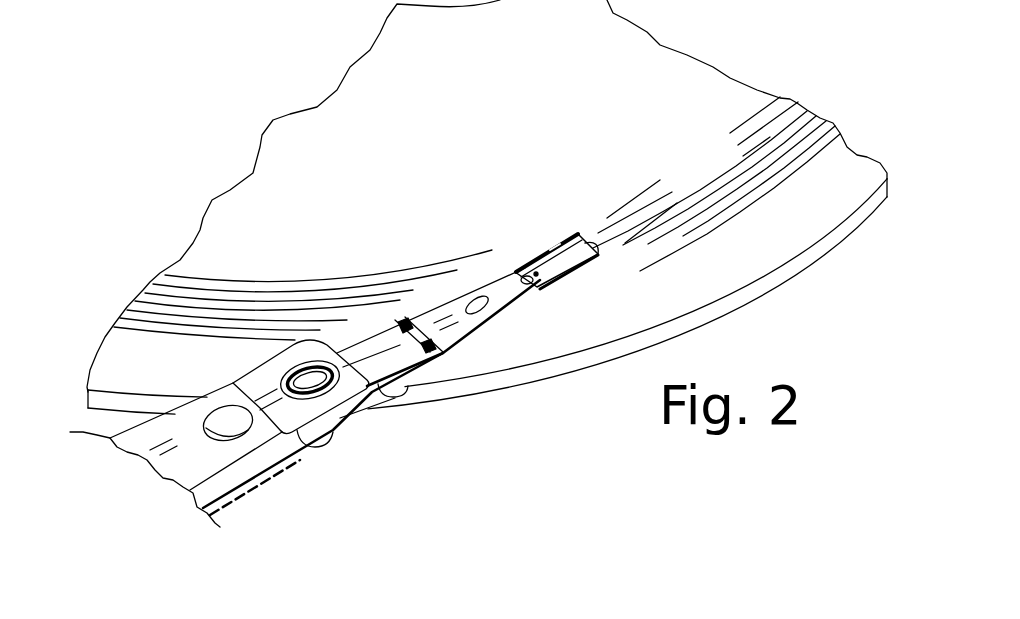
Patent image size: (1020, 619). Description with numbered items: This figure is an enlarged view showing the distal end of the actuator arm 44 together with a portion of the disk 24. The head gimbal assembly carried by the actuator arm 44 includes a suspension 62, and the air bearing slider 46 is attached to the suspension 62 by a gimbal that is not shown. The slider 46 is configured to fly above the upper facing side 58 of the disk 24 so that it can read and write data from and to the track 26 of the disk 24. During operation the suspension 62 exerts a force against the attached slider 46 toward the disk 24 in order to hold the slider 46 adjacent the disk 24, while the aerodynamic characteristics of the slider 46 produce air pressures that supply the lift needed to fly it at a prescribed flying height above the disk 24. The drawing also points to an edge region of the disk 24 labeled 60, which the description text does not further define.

The disk 24 is at (342, 102).
The track 26 is at (727, 173).
The actuator arm 44 is at (188, 472).
The air bearing slider 46 is at (583, 270).
The upper facing side 58 is at (861, 162).
The disk outer edge 60 is at (872, 219).
The suspension 62 is at (460, 349).